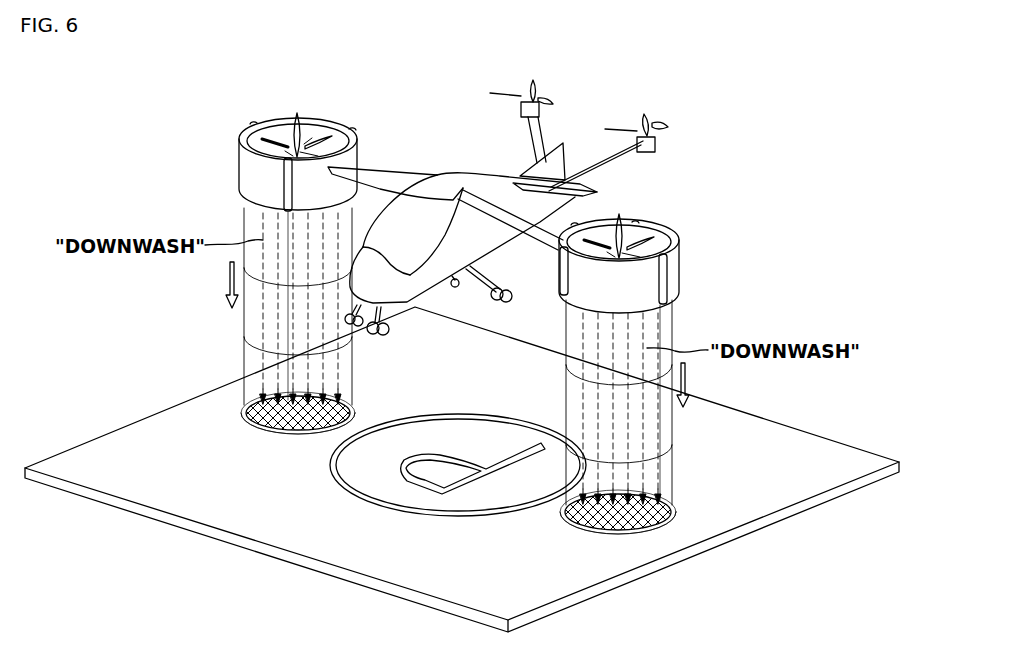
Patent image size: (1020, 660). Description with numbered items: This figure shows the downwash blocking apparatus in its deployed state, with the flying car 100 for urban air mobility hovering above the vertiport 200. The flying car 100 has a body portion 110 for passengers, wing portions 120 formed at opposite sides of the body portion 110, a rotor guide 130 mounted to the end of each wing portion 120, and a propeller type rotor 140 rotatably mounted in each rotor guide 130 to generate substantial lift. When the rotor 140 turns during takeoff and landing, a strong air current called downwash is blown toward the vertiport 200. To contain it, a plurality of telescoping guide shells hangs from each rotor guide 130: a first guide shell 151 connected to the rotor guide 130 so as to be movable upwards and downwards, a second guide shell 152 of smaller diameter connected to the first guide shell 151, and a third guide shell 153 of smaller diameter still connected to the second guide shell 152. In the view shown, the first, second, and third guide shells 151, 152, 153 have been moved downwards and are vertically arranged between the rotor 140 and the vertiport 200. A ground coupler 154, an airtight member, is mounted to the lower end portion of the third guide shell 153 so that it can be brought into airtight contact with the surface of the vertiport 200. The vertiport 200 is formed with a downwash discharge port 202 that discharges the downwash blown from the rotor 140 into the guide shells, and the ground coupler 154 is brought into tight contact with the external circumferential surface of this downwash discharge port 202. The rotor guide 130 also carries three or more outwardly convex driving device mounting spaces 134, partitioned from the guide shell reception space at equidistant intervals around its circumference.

The flying car 100 is at (498, 207).
The body portion 110 is at (483, 245).
The wing portion 120 is at (373, 168).
The rotor guide 130 is at (243, 163).
The driving device mounting space 134 is at (286, 190).
The rotor 140 is at (320, 132).
The first guide shell 151 is at (673, 322).
The second guide shell 152 is at (673, 421).
The third guide shell 153 is at (673, 473).
The ground coupler 154 is at (674, 508).
The vertiport 200 is at (252, 524).
The downwash discharge port 202 is at (257, 400).